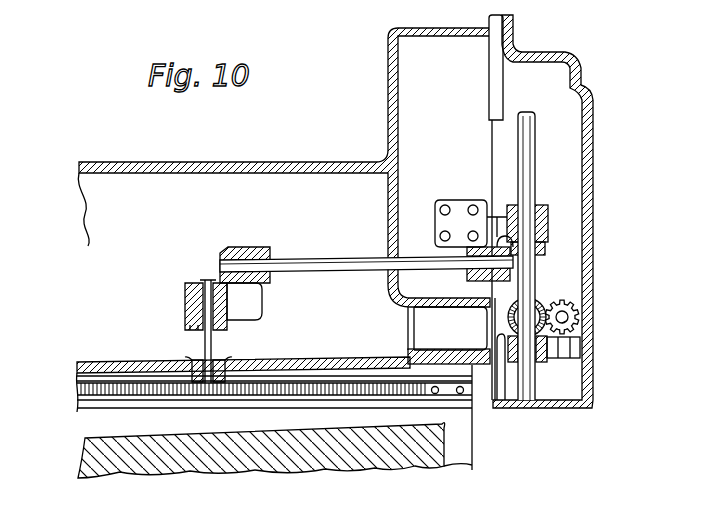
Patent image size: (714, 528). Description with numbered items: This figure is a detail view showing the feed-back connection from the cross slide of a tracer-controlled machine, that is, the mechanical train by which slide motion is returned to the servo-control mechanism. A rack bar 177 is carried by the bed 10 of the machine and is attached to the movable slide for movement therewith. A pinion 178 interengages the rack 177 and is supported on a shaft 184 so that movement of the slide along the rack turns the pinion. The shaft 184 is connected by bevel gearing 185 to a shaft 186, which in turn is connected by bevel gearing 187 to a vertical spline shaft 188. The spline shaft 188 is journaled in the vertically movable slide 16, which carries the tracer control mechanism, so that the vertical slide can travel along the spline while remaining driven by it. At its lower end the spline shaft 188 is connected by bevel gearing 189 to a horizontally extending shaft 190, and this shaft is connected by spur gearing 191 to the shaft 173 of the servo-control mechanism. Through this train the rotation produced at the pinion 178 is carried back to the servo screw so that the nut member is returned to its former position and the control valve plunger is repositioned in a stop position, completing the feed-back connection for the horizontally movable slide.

The bed 10 is at (86, 462).
The vertically movable slide 16 is at (590, 131).
The shaft 173 is at (574, 326).
The rack bar 177 is at (78, 386).
The pinion 178 is at (236, 372).
The shaft 184 is at (205, 340).
The bevel gearing 185 is at (208, 283).
The shaft 186 is at (351, 241).
The bevel gearing 187 is at (548, 250).
The vertical spline shaft 188 is at (535, 173).
The bevel gearing 189 is at (503, 410).
The horizontally extending shaft 190 is at (546, 300).
The spur gearing 191 is at (572, 296).